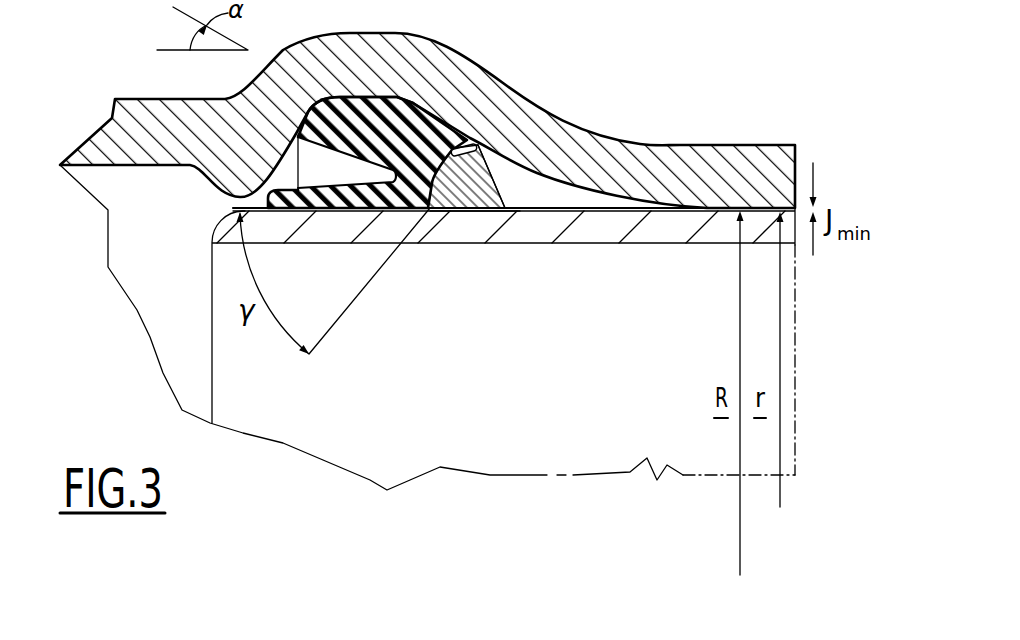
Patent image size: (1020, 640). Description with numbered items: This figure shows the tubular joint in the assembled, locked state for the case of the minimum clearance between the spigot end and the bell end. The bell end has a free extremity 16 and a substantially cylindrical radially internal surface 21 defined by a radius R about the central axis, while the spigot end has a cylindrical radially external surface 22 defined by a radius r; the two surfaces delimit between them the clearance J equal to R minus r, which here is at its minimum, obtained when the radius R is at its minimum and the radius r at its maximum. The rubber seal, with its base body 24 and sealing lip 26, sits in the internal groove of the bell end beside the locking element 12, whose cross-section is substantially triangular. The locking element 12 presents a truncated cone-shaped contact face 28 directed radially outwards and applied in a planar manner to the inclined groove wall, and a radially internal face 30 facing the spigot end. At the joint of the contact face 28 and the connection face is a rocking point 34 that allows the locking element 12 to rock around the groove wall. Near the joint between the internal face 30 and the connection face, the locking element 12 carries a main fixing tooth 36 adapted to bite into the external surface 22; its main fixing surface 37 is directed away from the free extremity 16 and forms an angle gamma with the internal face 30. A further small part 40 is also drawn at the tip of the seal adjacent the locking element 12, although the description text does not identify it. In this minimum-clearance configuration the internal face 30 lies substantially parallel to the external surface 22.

The locking element 12 is at (492, 190).
The free extremity 16 is at (797, 161).
The radially internal surface 21 is at (705, 215).
The radially external surface 22 is at (567, 199).
The base body 24 is at (408, 103).
The sealing lip 26 is at (322, 197).
The contact face 28 is at (510, 185).
The radially internal face 30 is at (479, 216).
The rocking point 34 is at (478, 148).
The main fixing tooth 36 is at (429, 210).
The main fixing surface 37 is at (405, 211).
The insert 40 is at (464, 146).